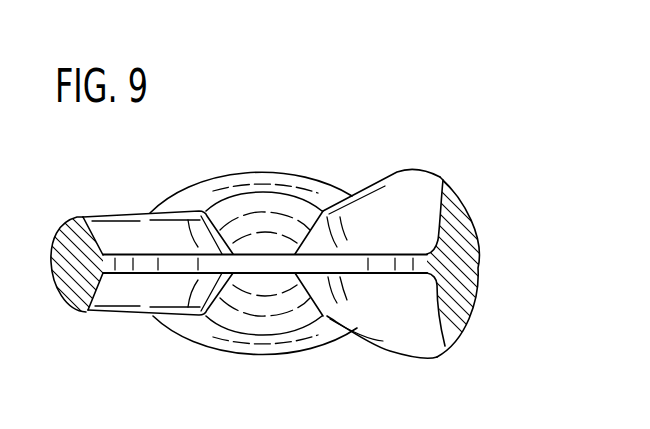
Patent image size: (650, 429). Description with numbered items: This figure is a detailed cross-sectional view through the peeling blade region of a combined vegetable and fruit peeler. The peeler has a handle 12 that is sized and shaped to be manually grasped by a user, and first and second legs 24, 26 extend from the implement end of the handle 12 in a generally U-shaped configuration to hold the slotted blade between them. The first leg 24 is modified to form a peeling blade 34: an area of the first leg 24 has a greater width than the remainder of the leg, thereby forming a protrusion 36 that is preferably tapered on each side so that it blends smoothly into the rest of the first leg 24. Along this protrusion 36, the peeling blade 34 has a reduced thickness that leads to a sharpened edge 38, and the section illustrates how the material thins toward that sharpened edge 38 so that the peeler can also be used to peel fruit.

The handle 12 is at (262, 174).
The first leg 24 is at (382, 347).
The second leg 26 is at (103, 315).
The peeling blade 34 is at (419, 260).
The protrusion 36 is at (478, 267).
The sharpened edge 38 is at (422, 167).